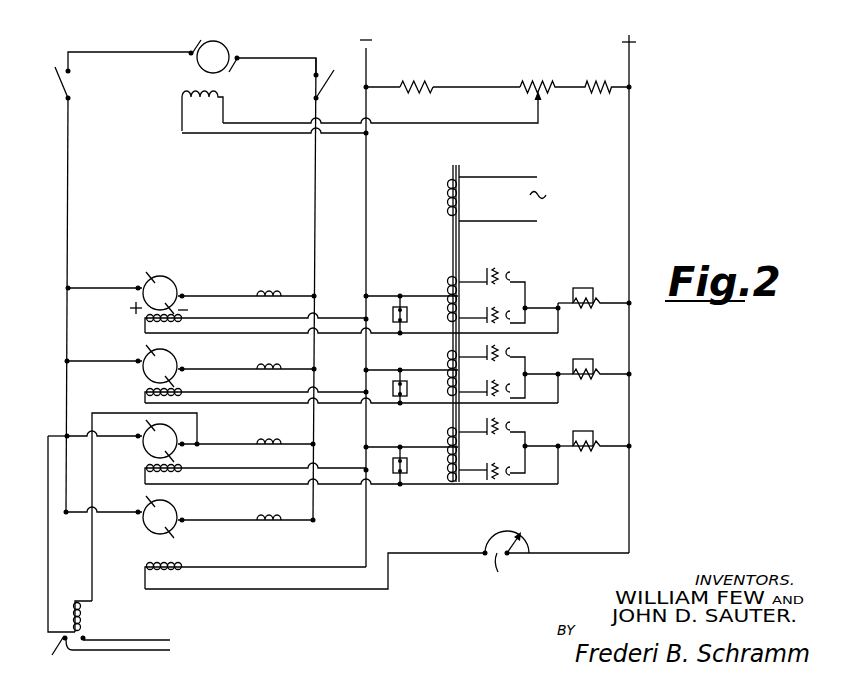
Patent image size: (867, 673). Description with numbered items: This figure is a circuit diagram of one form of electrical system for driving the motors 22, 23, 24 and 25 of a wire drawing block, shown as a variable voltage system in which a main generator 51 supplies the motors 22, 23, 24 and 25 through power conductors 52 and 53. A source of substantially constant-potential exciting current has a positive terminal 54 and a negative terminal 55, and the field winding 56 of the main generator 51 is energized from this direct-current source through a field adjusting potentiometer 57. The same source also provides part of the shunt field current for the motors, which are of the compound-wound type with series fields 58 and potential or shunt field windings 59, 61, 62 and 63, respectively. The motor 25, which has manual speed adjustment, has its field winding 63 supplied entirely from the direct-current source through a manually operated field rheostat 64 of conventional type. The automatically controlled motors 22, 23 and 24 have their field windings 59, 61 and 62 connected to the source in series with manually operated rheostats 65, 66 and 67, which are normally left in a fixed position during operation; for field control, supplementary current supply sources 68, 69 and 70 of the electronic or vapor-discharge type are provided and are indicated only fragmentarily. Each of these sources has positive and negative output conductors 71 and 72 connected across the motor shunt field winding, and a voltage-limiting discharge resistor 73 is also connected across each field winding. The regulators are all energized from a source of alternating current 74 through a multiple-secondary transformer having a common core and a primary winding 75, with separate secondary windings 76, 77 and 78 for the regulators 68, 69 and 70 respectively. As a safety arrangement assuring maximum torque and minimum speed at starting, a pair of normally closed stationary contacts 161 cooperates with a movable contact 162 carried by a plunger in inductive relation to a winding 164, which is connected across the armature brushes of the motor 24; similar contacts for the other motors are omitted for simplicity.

The motor 22 is at (172, 283).
The motor 23 is at (172, 364).
The motor 24 is at (147, 445).
The motor 25 is at (170, 513).
The main generator 51 is at (223, 48).
The power conductor 52 is at (68, 215).
The power conductor 53 is at (316, 200).
The positive terminal 54 is at (631, 62).
The negative terminal 55 is at (366, 70).
The field winding 56 is at (215, 98).
The potentiometer 57 is at (522, 86).
The series field 58 is at (268, 290).
The potential field winding 59 is at (193, 318).
The potential field winding 61 is at (172, 393).
The potential field winding 62 is at (175, 468).
The potential field winding 63 is at (175, 566).
The field rheostat 64 is at (556, 560).
The rheostat 65 is at (594, 298).
The rheostat 66 is at (593, 370).
The rheostat 67 is at (595, 443).
The supplementary current supply source 68 is at (493, 295).
The supplementary current supply source 69 is at (493, 371).
The supplementary current supply source 70 is at (493, 449).
The positive output conductor 71 is at (541, 303).
The negative output conductor 72 is at (421, 295).
The voltage-limiting discharge resistor 73 is at (407, 310).
The source of alternating current 74 is at (548, 193).
The primary winding 75 is at (449, 202).
The secondary winding 76 is at (494, 302).
The secondary winding 77 is at (494, 376).
The secondary winding 78 is at (494, 448).
The normally closed contacts 161 is at (86, 640).
The movable contact 162 is at (58, 655).
The winding 164 is at (80, 613).